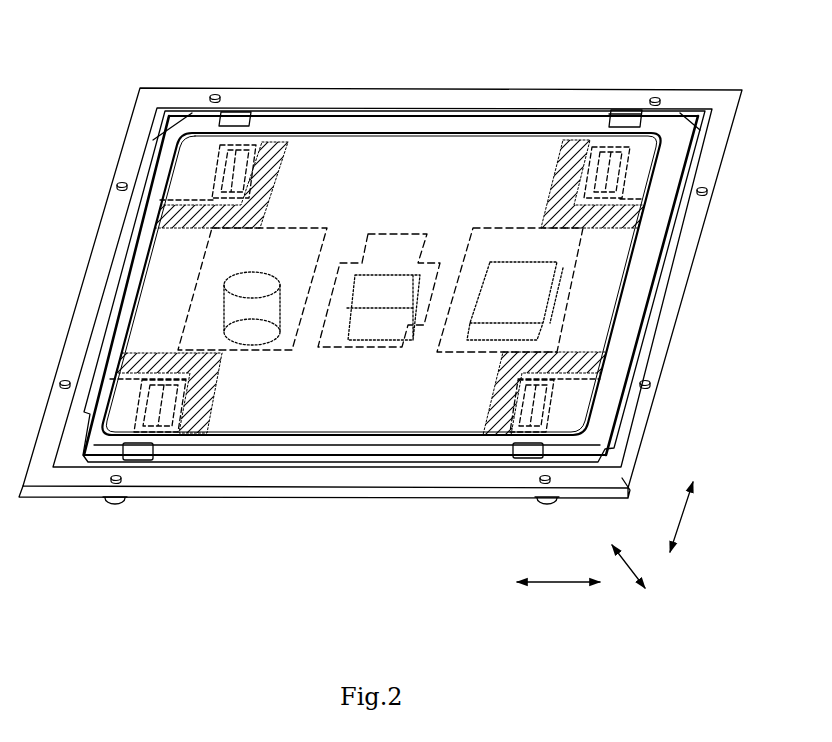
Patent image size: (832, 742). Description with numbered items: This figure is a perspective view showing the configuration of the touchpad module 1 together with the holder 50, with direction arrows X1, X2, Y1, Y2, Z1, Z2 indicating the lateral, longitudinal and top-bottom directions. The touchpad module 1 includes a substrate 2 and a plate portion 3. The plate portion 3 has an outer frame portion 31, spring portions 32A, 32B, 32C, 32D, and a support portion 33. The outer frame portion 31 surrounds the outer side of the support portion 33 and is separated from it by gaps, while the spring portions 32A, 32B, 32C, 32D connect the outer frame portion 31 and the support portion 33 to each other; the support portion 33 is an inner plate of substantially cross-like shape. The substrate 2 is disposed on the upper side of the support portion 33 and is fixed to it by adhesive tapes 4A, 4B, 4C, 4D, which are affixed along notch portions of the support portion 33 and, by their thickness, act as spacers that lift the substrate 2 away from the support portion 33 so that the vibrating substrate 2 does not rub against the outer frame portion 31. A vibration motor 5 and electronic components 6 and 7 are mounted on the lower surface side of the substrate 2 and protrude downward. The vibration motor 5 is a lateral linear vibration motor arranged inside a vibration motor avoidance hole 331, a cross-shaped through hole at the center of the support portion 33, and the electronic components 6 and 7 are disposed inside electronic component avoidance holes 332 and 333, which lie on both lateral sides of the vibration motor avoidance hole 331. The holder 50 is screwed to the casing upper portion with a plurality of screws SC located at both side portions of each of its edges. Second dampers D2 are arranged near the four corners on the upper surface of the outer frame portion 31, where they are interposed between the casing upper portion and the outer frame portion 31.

The touchpad module 1 is at (442, 158).
The substrate 2 is at (517, 150).
The plate portion 3 is at (608, 470).
The outer frame portion 31 is at (692, 120).
The support portion 33 is at (622, 298).
The holder 50 is at (745, 108).
The adhesive tape 4A is at (207, 420).
The adhesive tape 4B is at (482, 434).
The adhesive tape 4C is at (284, 165).
The adhesive tape 4D is at (553, 160).
The spring portion 32A is at (160, 393).
The spring portion 32B is at (548, 397).
The spring portion 32C is at (213, 186).
The spring portion 32D is at (610, 185).
The vibration motor 5 is at (347, 330).
The electronic component 6 is at (293, 348).
The electronic component 7 is at (470, 328).
The vibration motor avoidance hole 331 is at (404, 234).
The electronic component avoidance hole 332 is at (328, 228).
The electronic component avoidance hole 333 is at (490, 228).
The screw SC is at (112, 503).
The second damper D2 is at (140, 461).
The X1 direction X1 is at (549, 600).
The X2 direction X2 is at (596, 606).
The Y1 direction Y1 is at (674, 566).
The Y2 direction Y2 is at (696, 514).
The Z1 direction Z1 is at (616, 553).
The Z2 direction Z2 is at (653, 606).